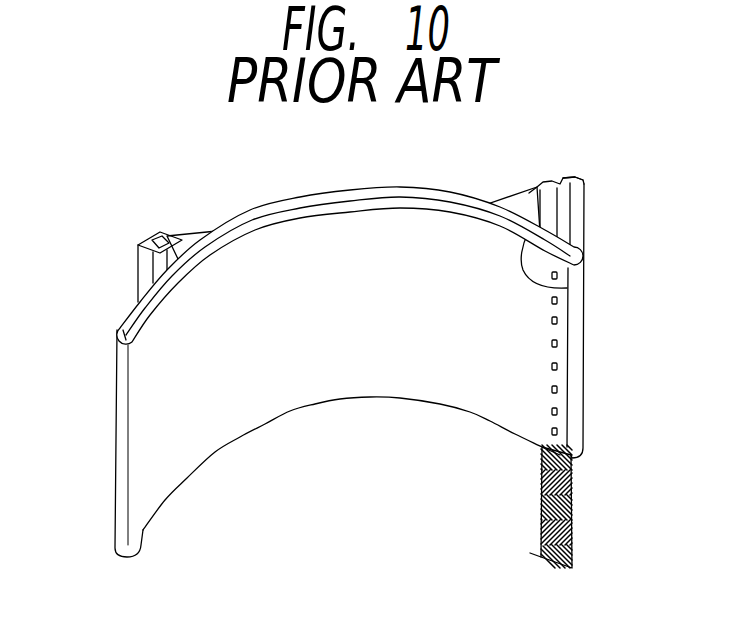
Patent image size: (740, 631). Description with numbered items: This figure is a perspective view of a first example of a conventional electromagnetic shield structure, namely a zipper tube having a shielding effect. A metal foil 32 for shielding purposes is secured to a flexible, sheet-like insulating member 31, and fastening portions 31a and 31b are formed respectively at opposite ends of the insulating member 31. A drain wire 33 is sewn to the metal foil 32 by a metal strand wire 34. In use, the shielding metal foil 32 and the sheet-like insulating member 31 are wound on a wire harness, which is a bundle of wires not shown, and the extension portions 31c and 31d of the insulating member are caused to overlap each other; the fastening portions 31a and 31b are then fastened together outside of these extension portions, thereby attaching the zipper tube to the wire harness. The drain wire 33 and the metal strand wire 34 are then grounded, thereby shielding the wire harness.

The sheet-like insulating member 31 is at (346, 190).
The fastening portion 31a is at (150, 240).
The fastening portion 31b is at (577, 178).
The extension portion 31c is at (530, 282).
The extension portion 31d is at (140, 305).
The metal foil 32 is at (358, 388).
The drain wire 33 is at (574, 244).
The metal strand wire 34 is at (557, 320).